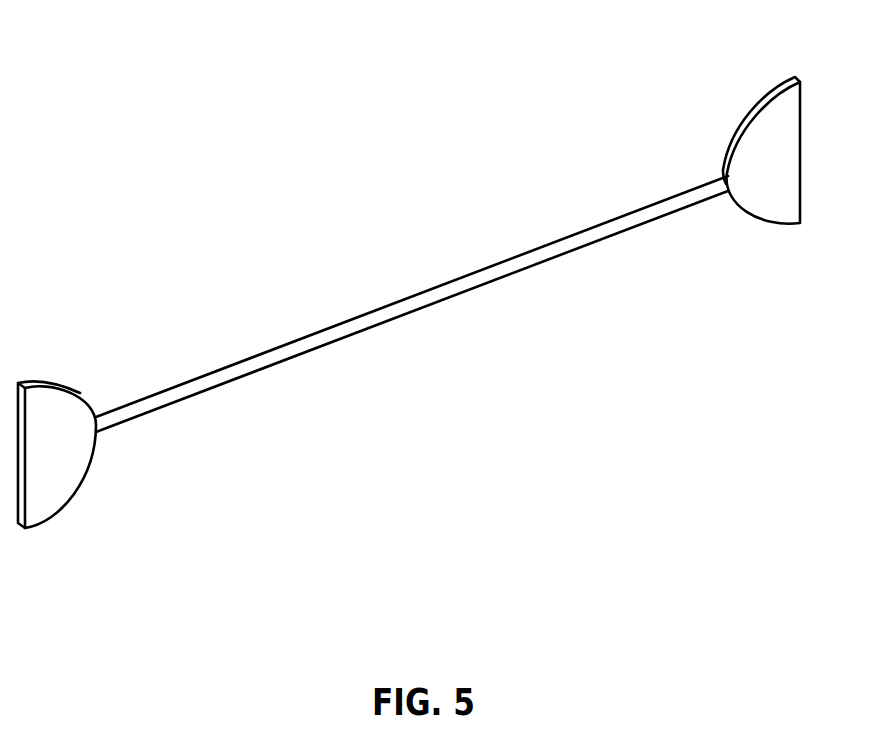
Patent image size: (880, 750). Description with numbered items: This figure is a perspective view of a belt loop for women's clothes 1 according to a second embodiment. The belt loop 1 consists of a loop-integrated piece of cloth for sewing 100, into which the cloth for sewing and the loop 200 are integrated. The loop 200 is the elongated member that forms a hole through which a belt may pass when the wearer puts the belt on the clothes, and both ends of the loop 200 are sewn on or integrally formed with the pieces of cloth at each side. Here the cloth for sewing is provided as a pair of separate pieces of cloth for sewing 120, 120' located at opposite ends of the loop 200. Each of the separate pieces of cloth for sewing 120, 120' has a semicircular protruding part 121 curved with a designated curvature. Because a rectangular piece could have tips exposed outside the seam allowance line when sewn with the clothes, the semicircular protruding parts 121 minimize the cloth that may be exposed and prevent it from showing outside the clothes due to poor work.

The belt loop for women's clothes 1 is at (78, 60).
The loop-integrated piece of cloth for sewing 100 is at (640, 447).
The separate piece of cloth for sewing 120 is at (214, 395).
The separate piece of cloth for sewing 120' is at (700, 262).
The semicircular protruding part 121 is at (61, 380).
The loop 200 is at (399, 301).